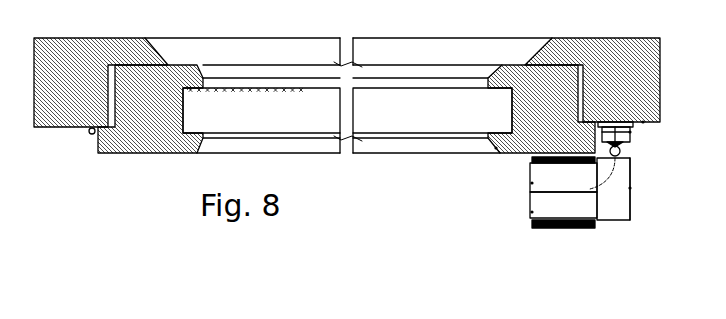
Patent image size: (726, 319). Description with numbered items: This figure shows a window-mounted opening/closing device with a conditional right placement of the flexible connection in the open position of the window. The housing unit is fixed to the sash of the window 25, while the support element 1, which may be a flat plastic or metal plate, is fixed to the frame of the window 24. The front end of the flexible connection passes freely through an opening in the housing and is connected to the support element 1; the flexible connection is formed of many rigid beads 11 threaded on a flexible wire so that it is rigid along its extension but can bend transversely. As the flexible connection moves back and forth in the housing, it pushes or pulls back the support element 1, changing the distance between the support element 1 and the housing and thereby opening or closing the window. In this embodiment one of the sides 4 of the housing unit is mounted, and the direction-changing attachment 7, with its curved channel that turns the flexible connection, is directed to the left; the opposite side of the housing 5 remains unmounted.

The frame of the window 24 is at (643, 122).
The support element 1 is at (630, 132).
The beads 11 is at (630, 188).
The direction-changing attachment 7 is at (630, 190).
The opposite side of the housing 5 is at (532, 183).
The side of the housing unit 4 is at (532, 212).
The sash of the window 25 is at (496, 148).